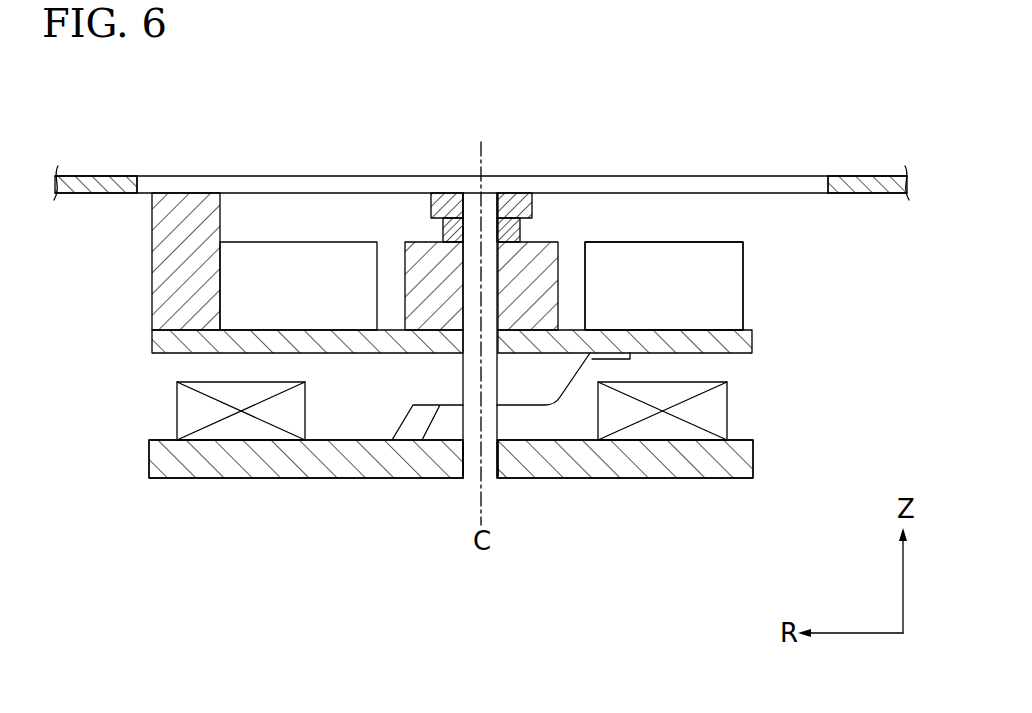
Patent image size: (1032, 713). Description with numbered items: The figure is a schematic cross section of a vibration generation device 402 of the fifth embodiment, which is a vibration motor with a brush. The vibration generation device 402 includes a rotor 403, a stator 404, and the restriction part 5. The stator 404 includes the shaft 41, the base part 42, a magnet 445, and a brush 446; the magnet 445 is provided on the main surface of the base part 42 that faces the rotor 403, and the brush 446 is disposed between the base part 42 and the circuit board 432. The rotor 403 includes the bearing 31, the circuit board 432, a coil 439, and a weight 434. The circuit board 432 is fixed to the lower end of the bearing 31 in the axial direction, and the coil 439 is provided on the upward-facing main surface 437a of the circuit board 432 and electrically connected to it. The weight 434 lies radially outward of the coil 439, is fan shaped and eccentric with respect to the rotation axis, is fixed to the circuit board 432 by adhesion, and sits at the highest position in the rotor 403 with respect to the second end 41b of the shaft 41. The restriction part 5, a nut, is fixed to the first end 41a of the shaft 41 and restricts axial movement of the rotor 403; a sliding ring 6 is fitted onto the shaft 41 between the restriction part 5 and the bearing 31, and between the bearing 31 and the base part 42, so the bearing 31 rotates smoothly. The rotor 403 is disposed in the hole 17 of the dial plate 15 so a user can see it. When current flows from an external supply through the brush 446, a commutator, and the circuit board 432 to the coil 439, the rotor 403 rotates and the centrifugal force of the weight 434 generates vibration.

The dial plate 15 is at (92, 183).
The hole 17 is at (659, 170).
The coil 439 is at (298, 247).
The bearing 31 is at (417, 247).
The first end 41a is at (475, 192).
The restriction part 5 is at (517, 198).
The sliding ring 6 is at (515, 230).
The vibration generation device 402 is at (756, 239).
The rotor 403 is at (760, 286).
The weight 434 is at (158, 253).
The circuit board 432 is at (157, 340).
The main surface 437a is at (323, 330).
The magnet 445 is at (183, 412).
The stator 404 is at (772, 457).
The base part 42 is at (240, 470).
The shaft 41 is at (468, 423).
The second end 41b is at (487, 478).
The brush 446 is at (523, 405).